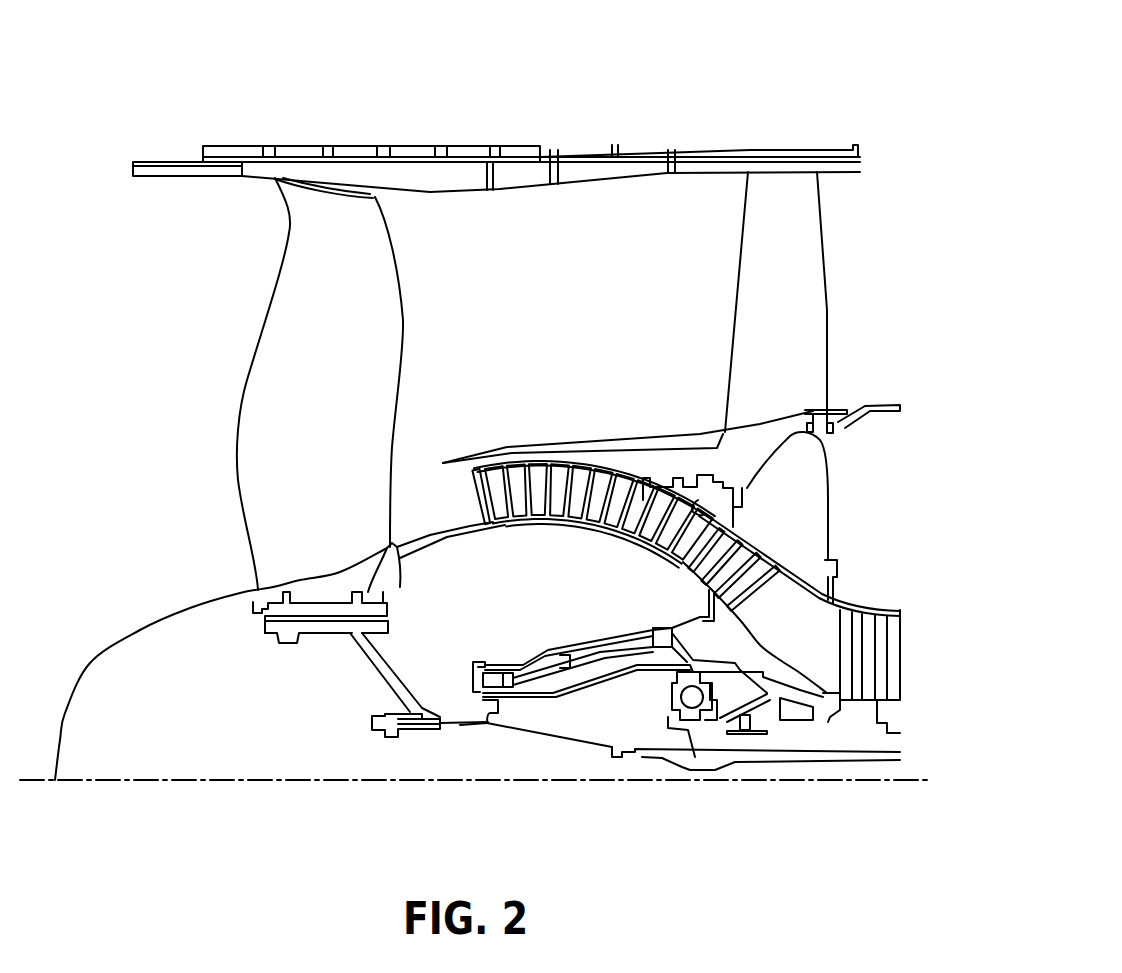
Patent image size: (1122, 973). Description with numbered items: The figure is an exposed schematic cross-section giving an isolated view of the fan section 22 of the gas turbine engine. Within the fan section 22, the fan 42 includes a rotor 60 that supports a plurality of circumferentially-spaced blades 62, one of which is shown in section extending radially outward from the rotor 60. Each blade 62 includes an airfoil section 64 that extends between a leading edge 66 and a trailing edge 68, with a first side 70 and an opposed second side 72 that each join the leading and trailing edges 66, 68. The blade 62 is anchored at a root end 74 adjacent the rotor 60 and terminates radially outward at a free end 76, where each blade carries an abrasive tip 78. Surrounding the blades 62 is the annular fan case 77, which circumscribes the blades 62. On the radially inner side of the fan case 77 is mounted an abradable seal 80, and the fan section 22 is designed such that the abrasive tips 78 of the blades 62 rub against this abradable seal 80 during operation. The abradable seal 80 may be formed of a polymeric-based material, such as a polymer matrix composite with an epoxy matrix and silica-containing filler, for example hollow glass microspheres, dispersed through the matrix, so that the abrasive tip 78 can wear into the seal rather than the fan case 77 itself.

The fan section 22 is at (662, 33).
The fan 42 is at (154, 597).
The rotor 60 is at (259, 641).
The blade 62 is at (327, 424).
The airfoil section 64 is at (303, 350).
The leading edge 66 is at (270, 302).
The trailing edge 68 is at (407, 332).
The first side 70 is at (370, 246).
The second side 72 is at (288, 232).
The root end 74 is at (328, 593).
The free end 76 is at (334, 191).
The fan case 77 is at (243, 150).
The abrasive tip 78 is at (363, 190).
The abradable seal 80 is at (347, 193).